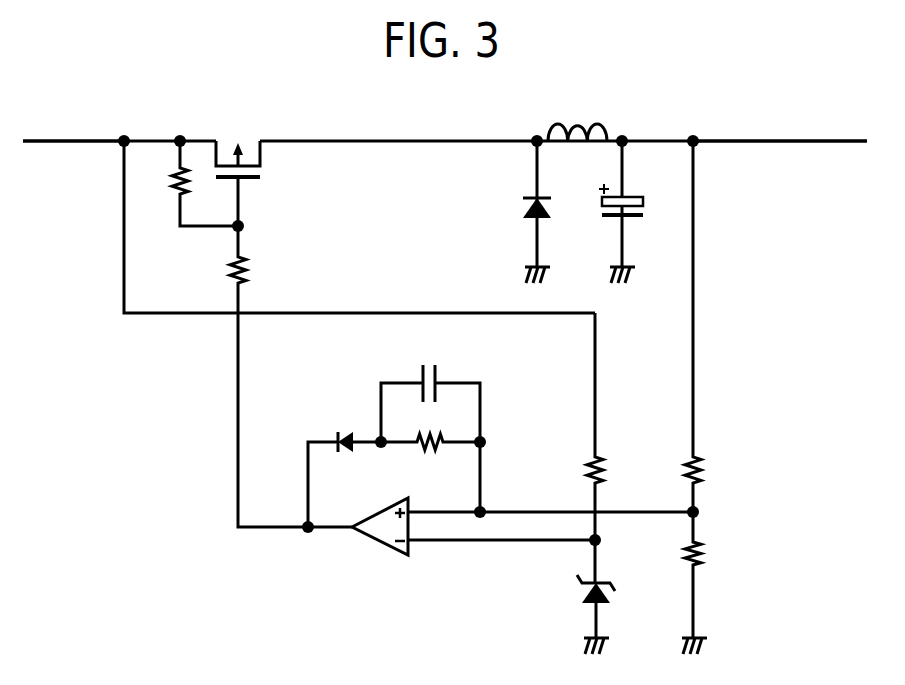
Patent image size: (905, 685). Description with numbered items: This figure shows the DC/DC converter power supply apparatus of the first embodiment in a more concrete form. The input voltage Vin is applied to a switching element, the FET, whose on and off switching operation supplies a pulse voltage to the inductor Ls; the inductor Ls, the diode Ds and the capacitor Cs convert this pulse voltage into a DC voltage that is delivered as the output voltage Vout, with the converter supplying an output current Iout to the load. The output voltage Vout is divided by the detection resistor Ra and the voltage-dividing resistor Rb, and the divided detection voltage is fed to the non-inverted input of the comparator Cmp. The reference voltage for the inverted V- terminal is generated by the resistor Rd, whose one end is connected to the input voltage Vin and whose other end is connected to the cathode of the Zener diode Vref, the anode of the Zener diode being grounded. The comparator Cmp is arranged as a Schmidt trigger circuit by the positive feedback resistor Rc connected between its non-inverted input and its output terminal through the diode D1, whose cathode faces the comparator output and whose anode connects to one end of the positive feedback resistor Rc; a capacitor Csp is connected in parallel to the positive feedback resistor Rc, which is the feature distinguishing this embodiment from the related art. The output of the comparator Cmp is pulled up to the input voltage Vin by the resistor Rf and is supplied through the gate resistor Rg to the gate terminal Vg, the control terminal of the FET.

The input voltage Vin is at (73, 128).
The output voltage Vout is at (780, 129).
The output current Iout is at (822, 157).
The field effect transistor FET is at (238, 144).
The gate terminal Vg is at (253, 201).
The resistor Rf is at (191, 183).
The gate resistor Rg is at (291, 376).
The inductor Ls is at (577, 148).
The diode Ds is at (523, 212).
The capacitor Cs is at (609, 212).
The capacitor Csp is at (430, 426).
The diode D1 is at (344, 466).
The positive feedback resistor Rc is at (430, 426).
The comparator Cmp is at (380, 535).
The V− terminal V- is at (501, 527).
The resistor Rd is at (612, 448).
The Zener diode Vref is at (620, 614).
The detection resistor Ra is at (709, 326).
The voltage-dividing resistor Rb is at (707, 583).